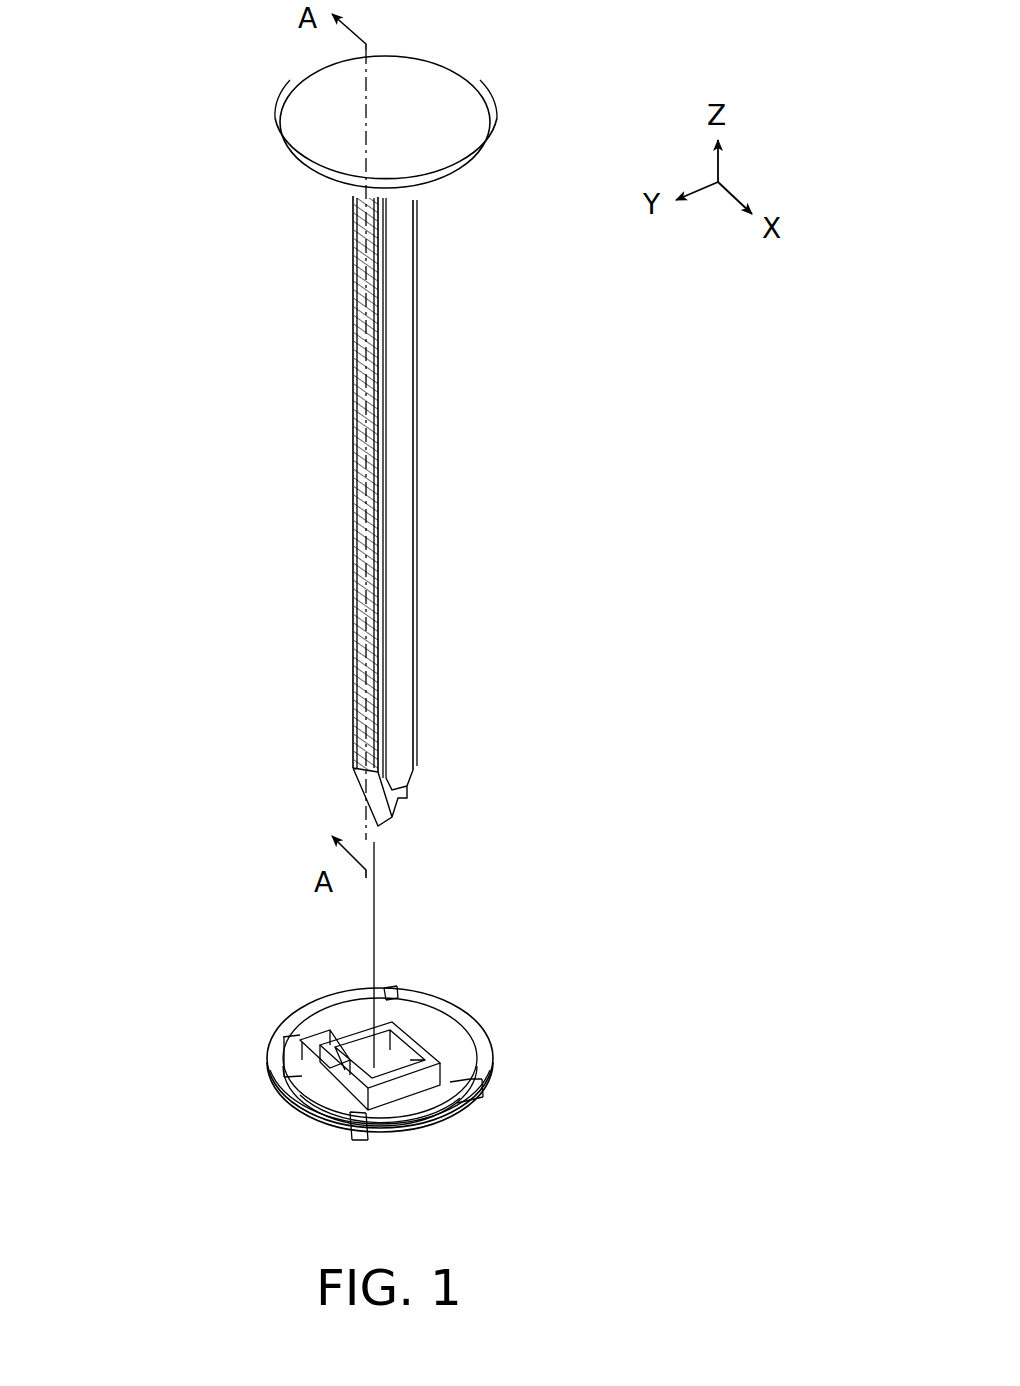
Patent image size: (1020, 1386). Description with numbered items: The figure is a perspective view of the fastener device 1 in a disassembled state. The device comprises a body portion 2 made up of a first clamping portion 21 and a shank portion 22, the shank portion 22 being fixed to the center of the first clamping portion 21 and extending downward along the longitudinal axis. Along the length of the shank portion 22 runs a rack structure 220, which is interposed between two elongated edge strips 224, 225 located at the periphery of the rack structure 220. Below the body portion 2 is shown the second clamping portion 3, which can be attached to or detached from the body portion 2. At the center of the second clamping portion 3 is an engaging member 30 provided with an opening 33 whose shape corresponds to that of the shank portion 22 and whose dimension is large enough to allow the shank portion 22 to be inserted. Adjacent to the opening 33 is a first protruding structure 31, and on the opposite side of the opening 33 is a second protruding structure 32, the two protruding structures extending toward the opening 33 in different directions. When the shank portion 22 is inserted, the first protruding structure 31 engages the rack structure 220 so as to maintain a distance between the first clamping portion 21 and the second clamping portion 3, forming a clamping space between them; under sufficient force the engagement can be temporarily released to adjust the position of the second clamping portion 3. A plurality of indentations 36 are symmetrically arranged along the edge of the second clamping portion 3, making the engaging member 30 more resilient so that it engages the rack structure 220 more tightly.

The fastener device 1 is at (112, 96).
The body portion 2 is at (433, 441).
The first clamping portion 21 is at (473, 146).
The shank portion 22 is at (395, 452).
The rack structure 220 is at (355, 388).
The edge strip 224 is at (353, 303).
The edge strip 225 is at (378, 333).
The second clamping portion 3 is at (394, 1044).
The engaging member 30 is at (427, 1037).
The first protruding structure 31 is at (415, 1125).
The second protruding structure 32 is at (362, 1045).
The opening 33 is at (455, 1093).
The indentations 36 is at (280, 1043).